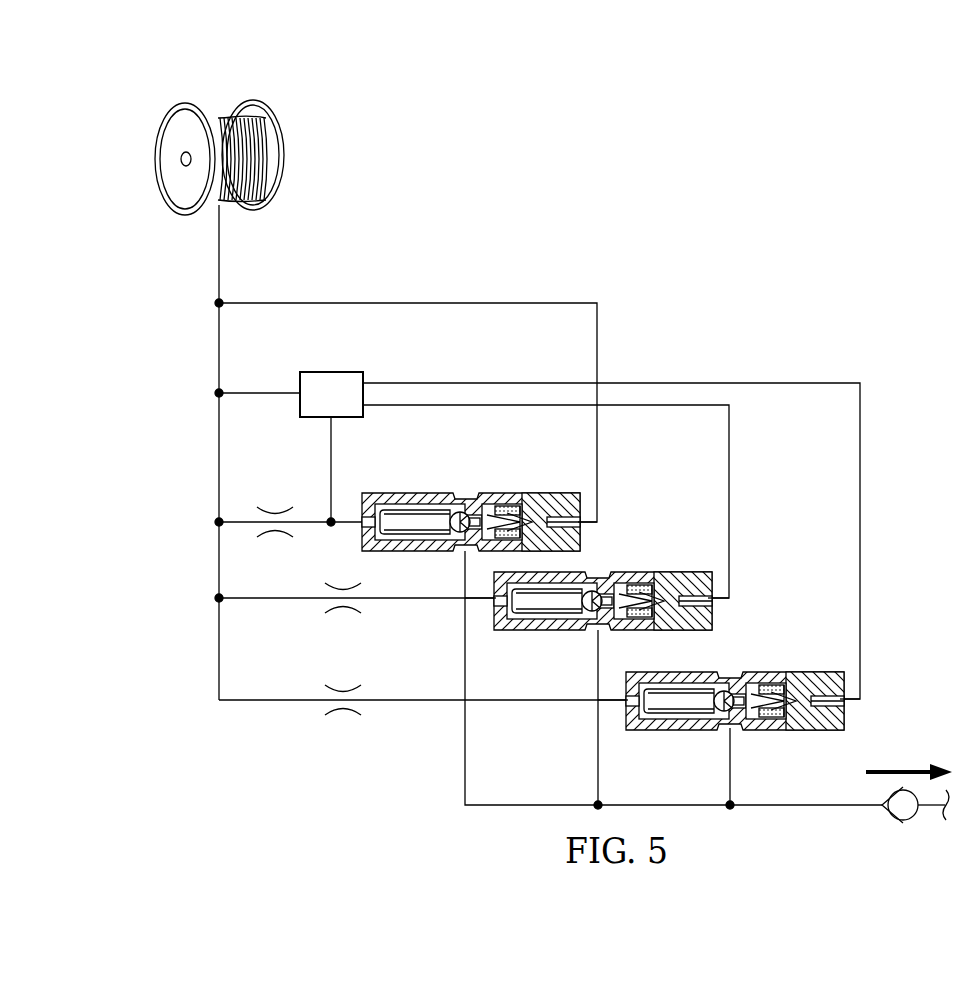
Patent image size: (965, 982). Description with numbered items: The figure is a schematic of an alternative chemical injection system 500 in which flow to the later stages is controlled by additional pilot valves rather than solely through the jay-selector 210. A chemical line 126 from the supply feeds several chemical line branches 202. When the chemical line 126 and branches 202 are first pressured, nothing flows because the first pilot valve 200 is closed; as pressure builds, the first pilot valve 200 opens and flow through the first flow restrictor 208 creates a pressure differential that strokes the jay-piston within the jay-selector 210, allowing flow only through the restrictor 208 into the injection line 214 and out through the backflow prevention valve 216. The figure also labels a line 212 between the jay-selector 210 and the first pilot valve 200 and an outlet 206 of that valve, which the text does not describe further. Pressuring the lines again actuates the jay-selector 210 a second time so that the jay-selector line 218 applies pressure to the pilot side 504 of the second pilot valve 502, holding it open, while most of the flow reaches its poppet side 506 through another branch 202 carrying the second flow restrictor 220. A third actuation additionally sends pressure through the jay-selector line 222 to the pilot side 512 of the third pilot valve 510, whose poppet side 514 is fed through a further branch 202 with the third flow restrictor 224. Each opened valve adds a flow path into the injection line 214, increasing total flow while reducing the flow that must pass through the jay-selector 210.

The chemical injection system 500 is at (634, 114).
The chemical line 126 is at (219, 252).
The chemical line branches 202 is at (403, 302).
The jay-selector 210 is at (331, 372).
The control line 212 is at (331, 470).
The jay-selector line 222 is at (770, 383).
The jay-selector line 218 is at (729, 508).
The first pilot valve 200 is at (538, 481).
The valve outlet port 206 is at (583, 524).
The first flow restrictor 208 is at (275, 537).
The second flow restrictor 220 is at (343, 612).
The third flow restrictor 224 is at (343, 713).
The second pilot valve 502 is at (672, 562).
The pilot side 504 is at (710, 622).
The poppet side 506 is at (487, 620).
The third pilot valve 510 is at (804, 660).
The pilot side 512 is at (838, 714).
The poppet side 514 is at (628, 706).
The injection line 214 is at (463, 640).
The backflow prevention valve 216 is at (905, 820).